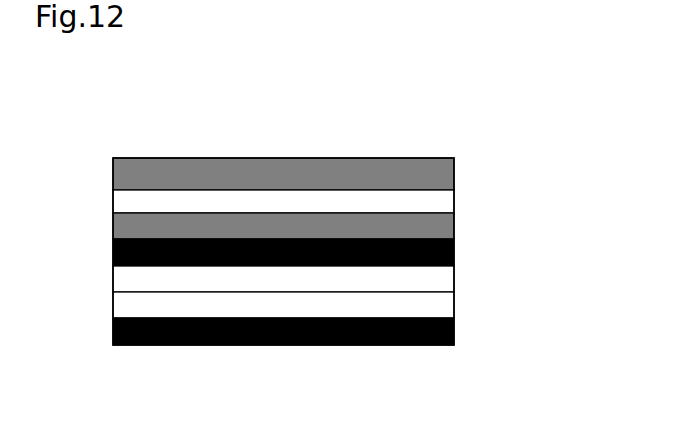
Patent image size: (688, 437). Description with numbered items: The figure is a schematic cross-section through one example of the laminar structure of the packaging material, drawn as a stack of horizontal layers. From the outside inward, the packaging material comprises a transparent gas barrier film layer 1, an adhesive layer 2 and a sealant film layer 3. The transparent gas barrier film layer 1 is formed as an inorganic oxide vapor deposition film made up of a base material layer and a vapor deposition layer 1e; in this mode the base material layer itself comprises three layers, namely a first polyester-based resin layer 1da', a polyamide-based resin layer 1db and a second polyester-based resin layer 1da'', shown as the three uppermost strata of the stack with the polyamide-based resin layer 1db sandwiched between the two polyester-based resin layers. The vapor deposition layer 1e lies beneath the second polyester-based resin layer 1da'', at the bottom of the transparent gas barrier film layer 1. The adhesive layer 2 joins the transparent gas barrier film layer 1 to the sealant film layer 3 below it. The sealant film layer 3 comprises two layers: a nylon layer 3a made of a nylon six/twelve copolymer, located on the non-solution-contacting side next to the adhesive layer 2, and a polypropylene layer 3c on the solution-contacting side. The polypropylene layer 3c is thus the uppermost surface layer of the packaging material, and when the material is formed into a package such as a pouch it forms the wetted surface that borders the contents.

The transparent gas barrier film layer 1 is at (555, 100).
The first polyester-based resin layer 1da' is at (331, 144).
The polyamide-based resin layer 1db is at (446, 200).
The second polyester-based resin layer 1da'' is at (333, 212).
The vapor deposition layer 1e is at (453, 252).
The adhesive layer 2 is at (445, 282).
The sealant film layer 3 is at (542, 307).
The layer made of nylon 6/12 3a is at (443, 305).
The polypropylene layer 3c is at (453, 342).